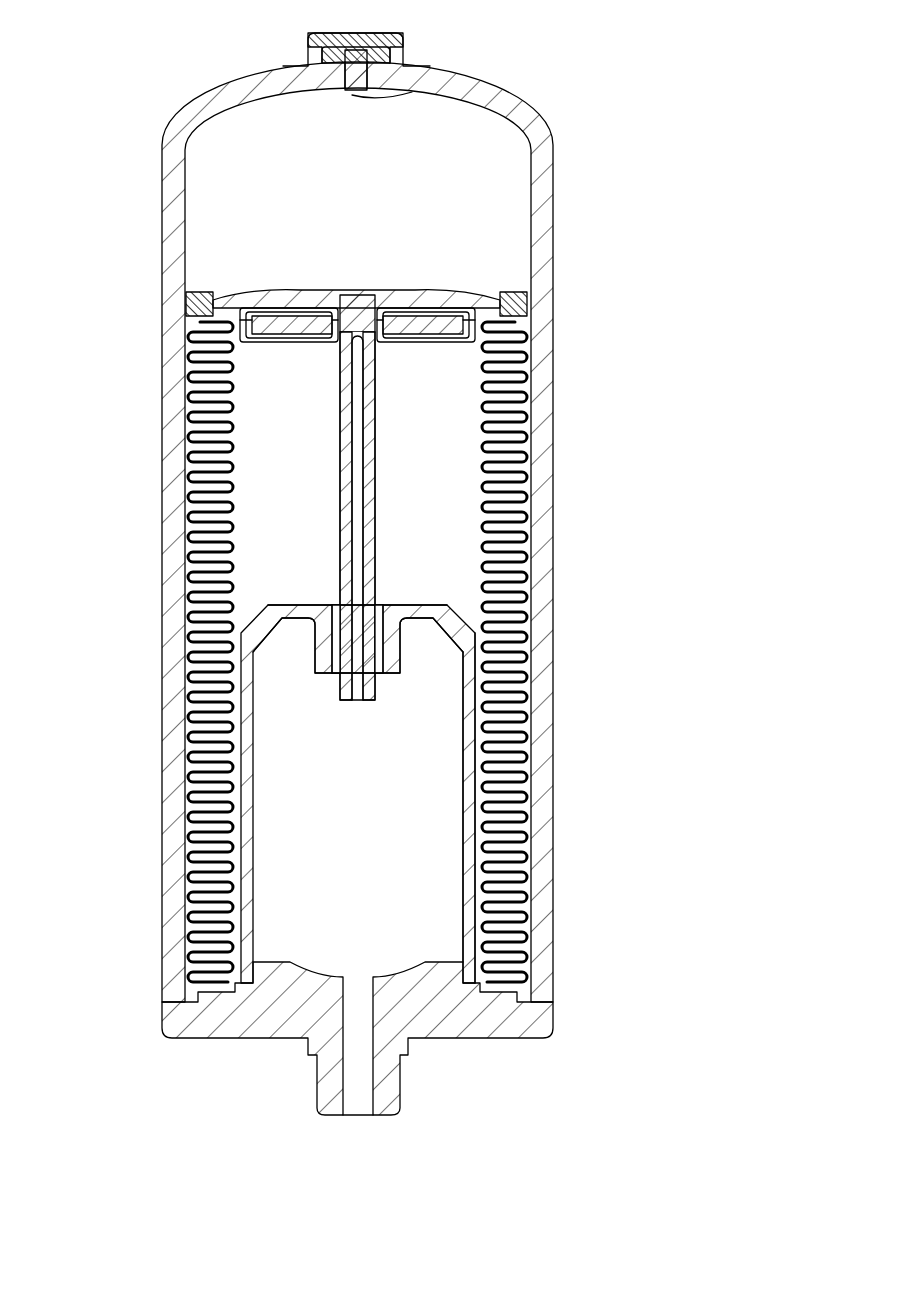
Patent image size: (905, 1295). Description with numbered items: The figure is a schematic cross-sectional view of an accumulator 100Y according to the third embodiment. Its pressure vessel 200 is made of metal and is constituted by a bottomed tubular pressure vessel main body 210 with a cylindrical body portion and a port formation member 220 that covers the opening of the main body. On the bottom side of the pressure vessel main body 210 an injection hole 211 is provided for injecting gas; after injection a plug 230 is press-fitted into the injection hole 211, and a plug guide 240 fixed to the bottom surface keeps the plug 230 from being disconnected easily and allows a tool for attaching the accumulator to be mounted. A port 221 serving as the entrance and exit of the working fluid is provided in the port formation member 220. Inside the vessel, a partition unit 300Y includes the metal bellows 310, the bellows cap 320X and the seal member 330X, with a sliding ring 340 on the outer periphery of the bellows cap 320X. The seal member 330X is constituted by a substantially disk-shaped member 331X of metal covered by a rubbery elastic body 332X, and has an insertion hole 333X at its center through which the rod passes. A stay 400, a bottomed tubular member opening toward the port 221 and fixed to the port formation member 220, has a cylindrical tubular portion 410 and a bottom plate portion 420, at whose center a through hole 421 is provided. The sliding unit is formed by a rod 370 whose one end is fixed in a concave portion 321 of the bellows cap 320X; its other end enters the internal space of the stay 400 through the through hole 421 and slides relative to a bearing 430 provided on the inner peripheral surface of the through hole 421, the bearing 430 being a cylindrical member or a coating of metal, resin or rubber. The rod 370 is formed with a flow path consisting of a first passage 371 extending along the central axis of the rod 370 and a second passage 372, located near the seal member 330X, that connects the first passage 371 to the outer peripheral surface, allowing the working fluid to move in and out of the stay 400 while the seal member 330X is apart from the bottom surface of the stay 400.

The accumulator 100Y is at (574, 78).
The pressure vessel 200 is at (152, 688).
The pressure vessel main body 210 is at (160, 388).
The injection hole 211 is at (412, 92).
The port formation member 220 is at (220, 1047).
The port 221 is at (362, 1076).
The plug 230 is at (367, 58).
The plug guide 240 is at (333, 33).
The partition unit 300Y is at (483, 233).
The metal bellows 310 is at (530, 788).
The bellows cap 320X is at (444, 296).
The concave portion 321 is at (361, 297).
The seal member 330X is at (305, 348).
The substantially disk-shaped member 331X is at (258, 330).
The rubbery elastic body 332X is at (282, 322).
The insertion hole 333X is at (303, 312).
The sliding ring 340 is at (514, 298).
The rod 370 is at (392, 460).
The first passage 371 is at (366, 500).
The second passage 372 is at (368, 343).
The stay 400 is at (252, 608).
The tubular portion 410 is at (474, 850).
The bottom plate portion 420 is at (302, 638).
The through hole 421 is at (380, 605).
The bearing 430 is at (384, 650).